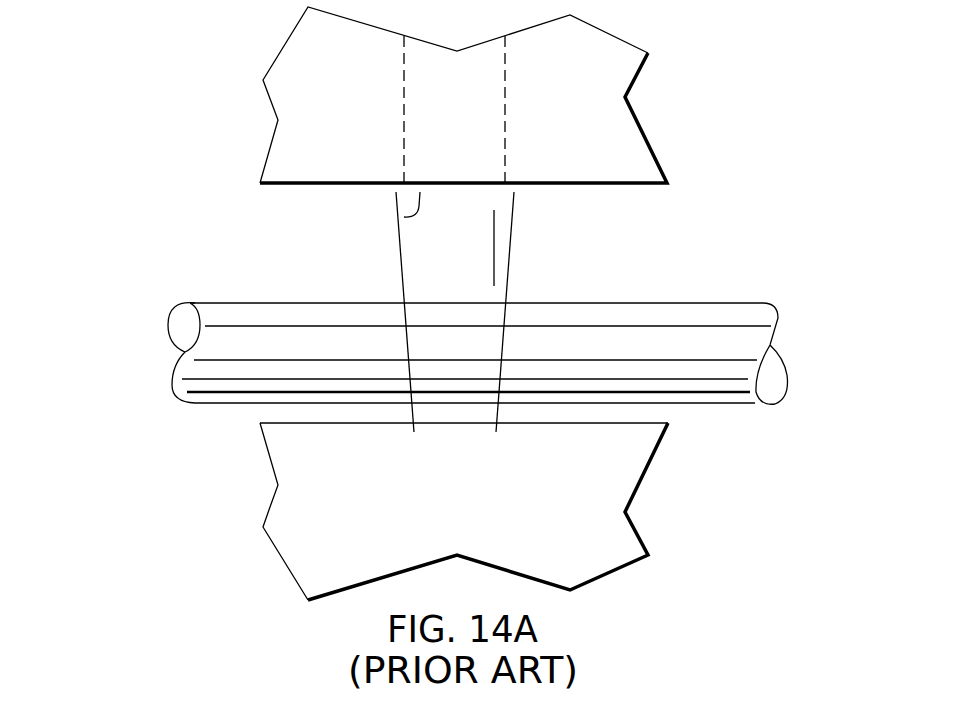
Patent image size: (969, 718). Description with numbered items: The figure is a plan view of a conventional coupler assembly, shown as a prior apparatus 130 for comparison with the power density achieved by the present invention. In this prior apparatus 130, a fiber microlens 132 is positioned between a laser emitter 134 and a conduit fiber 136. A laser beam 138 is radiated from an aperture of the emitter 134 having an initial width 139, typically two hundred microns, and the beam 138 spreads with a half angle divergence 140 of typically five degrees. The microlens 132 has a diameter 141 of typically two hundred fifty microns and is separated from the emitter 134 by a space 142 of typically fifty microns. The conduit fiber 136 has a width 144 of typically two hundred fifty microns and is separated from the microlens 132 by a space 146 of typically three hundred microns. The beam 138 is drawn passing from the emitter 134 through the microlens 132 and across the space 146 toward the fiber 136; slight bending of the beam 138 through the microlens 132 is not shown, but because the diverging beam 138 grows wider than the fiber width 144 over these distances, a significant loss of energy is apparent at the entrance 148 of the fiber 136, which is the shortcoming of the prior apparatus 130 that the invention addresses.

The prior apparatus 130 is at (186, 137).
The fiber microlens 132 is at (215, 405).
The laser emitter 134 is at (267, 507).
The conduit fiber 136 is at (505, 87).
The laser beam 138 is at (400, 279).
The initial width 139 is at (540, 461).
The half angle divergence 140 is at (458, 225).
The diameter 141 is at (837, 305).
The space 142 is at (675, 425).
The width 144 is at (505, 108).
The space 146 is at (678, 187).
The entrance 148 is at (393, 216).